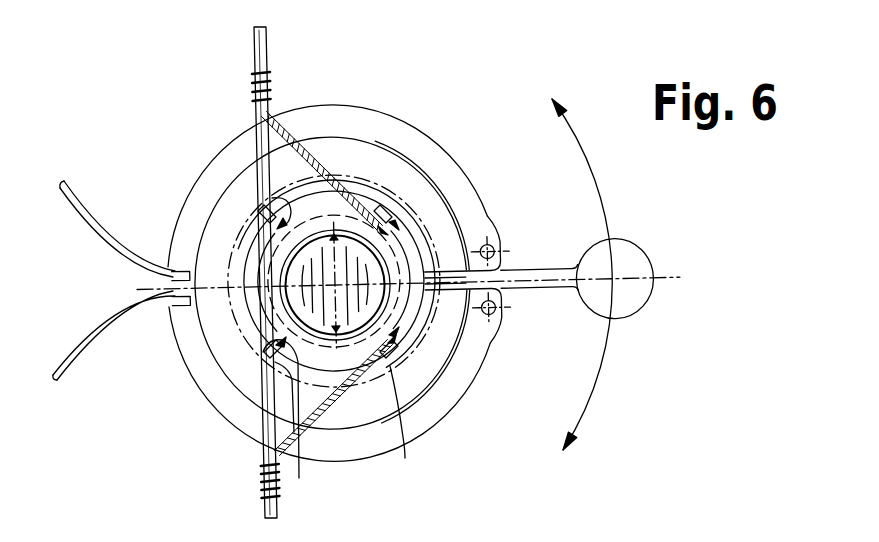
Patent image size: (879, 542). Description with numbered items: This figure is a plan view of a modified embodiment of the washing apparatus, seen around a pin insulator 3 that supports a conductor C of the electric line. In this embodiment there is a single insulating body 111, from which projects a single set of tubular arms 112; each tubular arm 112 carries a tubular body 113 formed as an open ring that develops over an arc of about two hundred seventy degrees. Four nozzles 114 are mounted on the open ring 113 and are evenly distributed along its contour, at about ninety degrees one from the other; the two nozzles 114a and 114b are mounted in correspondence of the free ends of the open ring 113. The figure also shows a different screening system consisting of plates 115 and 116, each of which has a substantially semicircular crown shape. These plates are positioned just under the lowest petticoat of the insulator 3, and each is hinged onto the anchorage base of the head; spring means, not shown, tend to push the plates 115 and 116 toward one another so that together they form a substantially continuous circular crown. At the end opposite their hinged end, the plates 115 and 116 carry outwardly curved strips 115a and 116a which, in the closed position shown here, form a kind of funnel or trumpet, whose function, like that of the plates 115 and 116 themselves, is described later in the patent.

The pin insulator 3 is at (357, 152).
The insulating body 111 is at (634, 254).
The tubular arm 112 is at (554, 288).
The tubular body 113 is at (405, 458).
The nozzle 114 is at (386, 196).
The nozzle 114a is at (272, 200).
The nozzle 114b is at (329, 419).
The plate 115 is at (203, 363).
The outwardly curved strip 115a is at (93, 337).
The plate 116 is at (222, 163).
The outwardly curved strip 116a is at (86, 222).
The conductor C is at (252, 43).